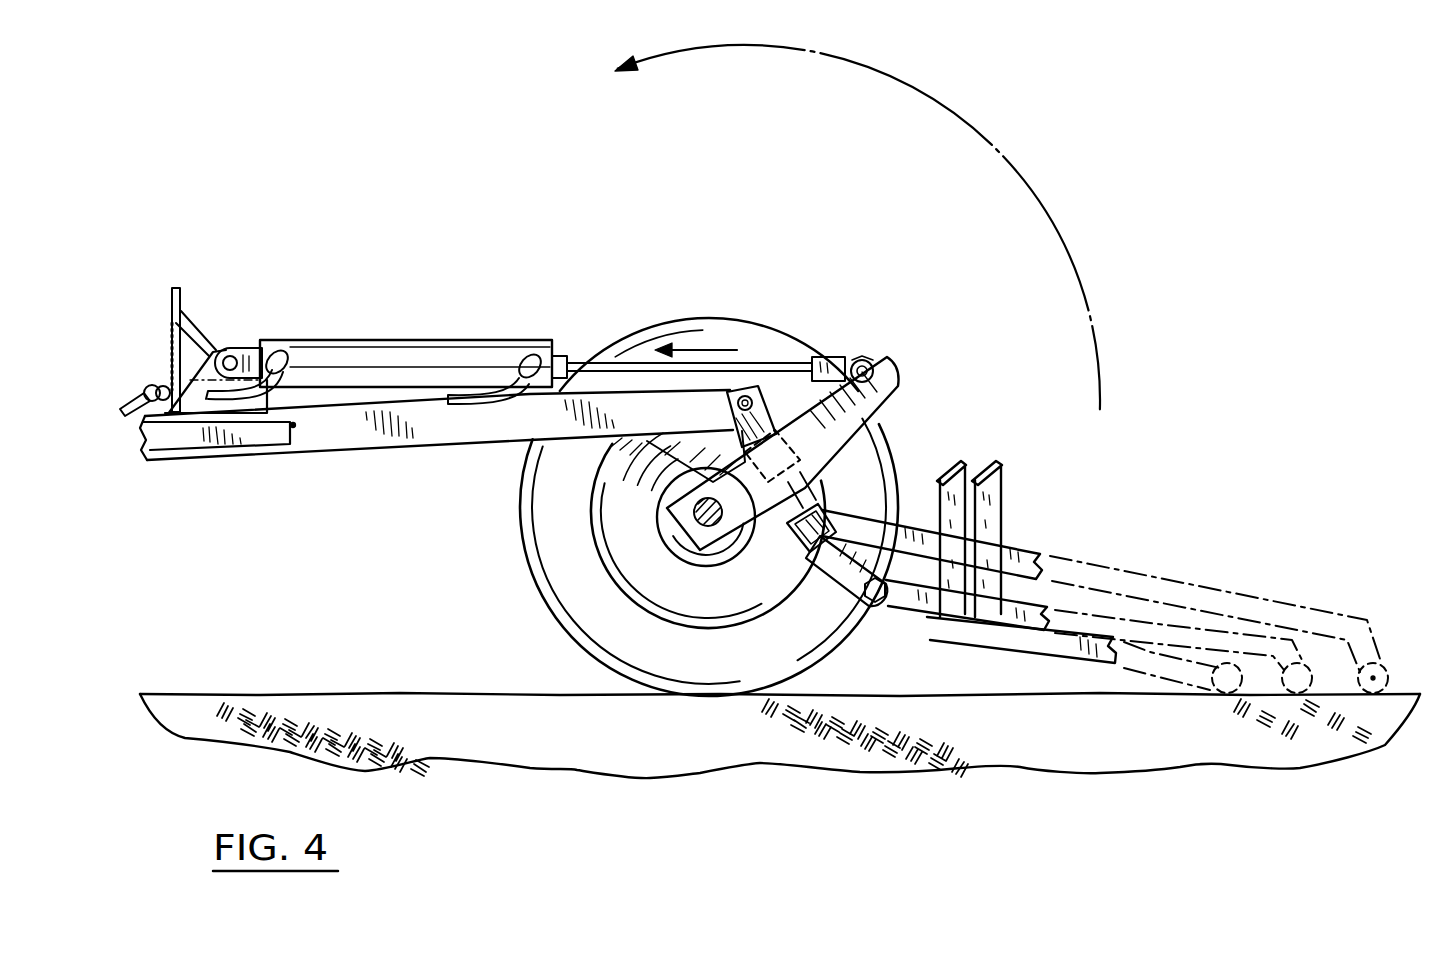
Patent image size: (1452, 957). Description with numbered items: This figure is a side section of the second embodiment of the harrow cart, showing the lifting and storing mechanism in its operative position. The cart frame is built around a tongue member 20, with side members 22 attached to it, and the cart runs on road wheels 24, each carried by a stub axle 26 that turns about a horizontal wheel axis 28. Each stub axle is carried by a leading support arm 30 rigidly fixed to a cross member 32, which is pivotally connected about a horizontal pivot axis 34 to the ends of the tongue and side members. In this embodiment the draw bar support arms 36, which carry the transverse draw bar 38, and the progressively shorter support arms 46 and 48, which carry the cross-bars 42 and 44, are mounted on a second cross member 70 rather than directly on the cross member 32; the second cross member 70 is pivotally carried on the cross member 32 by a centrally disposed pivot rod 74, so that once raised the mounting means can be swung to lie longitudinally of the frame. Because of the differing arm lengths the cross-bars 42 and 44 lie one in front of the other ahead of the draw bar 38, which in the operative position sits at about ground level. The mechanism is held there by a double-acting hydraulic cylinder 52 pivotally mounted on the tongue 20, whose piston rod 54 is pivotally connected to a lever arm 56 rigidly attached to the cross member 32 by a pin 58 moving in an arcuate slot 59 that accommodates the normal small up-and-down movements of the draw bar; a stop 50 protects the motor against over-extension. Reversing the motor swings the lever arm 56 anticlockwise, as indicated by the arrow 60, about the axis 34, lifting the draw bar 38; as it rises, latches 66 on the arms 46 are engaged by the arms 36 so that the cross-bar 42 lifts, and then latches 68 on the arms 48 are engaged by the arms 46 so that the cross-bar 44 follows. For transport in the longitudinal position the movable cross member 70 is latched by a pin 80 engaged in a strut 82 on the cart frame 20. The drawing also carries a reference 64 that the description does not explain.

The tongue member 20 is at (348, 436).
The side members 22 is at (229, 450).
The road wheels 24 is at (520, 531).
The stub axle 26 is at (693, 525).
The horizontal wheel axes 28 is at (690, 540).
The leading support arm 30 is at (722, 538).
The cross member 32 is at (815, 452).
The horizontal pivot axis 34 is at (750, 386).
The draw bar support arms 36 is at (1012, 553).
The draw bar 38 is at (1373, 693).
The cross-bar 42 is at (1297, 693).
The cross-bar 44 is at (1227, 693).
The support arms 46 is at (1043, 626).
The support arms 48 is at (1068, 641).
The stop 50 is at (700, 440).
The double-acting hydraulic cylinder 52 is at (374, 352).
The piston rod 54 is at (620, 358).
The lever arm 56 is at (862, 404).
The pin 58 is at (843, 355).
The arcuate slot 59 is at (863, 356).
The arrow 60 is at (696, 347).
The swing path arc 64 is at (1020, 165).
The latches 66 is at (961, 470).
The latches 68 is at (1001, 478).
The second cross member 70 is at (798, 556).
The pivot rod 74 is at (800, 543).
The pin 80 is at (147, 390).
The strut 82 is at (168, 296).